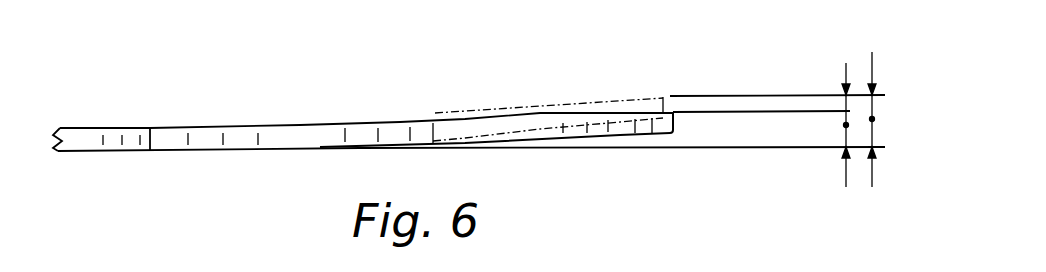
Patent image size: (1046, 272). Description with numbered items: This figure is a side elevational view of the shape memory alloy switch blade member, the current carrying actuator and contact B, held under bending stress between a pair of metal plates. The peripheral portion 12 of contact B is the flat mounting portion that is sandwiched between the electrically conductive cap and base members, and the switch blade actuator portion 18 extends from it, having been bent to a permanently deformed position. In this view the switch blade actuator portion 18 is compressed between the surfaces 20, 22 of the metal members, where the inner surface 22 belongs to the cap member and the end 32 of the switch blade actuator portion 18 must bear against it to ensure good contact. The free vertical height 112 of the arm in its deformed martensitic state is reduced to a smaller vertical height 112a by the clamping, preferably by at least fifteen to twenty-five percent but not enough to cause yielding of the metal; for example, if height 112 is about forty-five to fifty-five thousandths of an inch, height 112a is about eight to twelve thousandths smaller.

The peripheral portion 12 is at (103, 127).
The current carrying actuator and contact B is at (157, 124).
The switch blade actuator portion 18 is at (633, 99).
The surface 20 is at (574, 148).
The inner surface 22 is at (777, 111).
The end of switch blade actuator portion 32 is at (670, 101).
The vertical height 112 is at (872, 119).
The reduced vertical height 112a is at (846, 125).